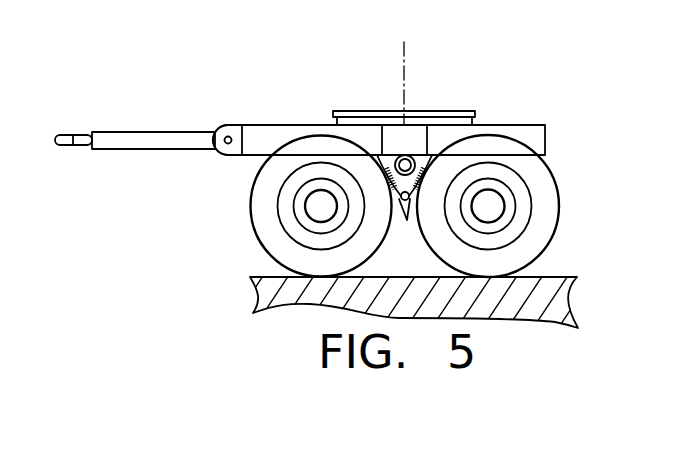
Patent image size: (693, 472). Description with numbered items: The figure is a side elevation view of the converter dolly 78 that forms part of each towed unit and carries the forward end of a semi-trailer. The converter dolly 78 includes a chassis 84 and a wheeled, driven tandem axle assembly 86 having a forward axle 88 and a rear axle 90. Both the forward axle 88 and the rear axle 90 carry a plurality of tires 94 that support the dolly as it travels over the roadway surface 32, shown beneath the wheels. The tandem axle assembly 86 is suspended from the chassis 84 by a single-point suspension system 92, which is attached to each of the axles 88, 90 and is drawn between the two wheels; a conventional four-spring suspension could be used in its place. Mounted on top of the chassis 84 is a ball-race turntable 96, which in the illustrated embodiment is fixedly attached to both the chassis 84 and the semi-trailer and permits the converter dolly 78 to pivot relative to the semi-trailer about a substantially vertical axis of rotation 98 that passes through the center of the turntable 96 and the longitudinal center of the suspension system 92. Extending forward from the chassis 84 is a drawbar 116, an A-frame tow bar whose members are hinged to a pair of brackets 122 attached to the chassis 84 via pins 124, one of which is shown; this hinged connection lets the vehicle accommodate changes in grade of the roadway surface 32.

The roadway surface 32 is at (267, 277).
The converter dolly 78 is at (359, 159).
The chassis 84 is at (546, 138).
The tandem axle assembly 86 is at (424, 206).
The forward axle 88 is at (312, 212).
The rear axle 90 is at (493, 212).
The single-point suspension system 92 is at (413, 227).
The tires 94 is at (253, 186).
The ball-race turntable 96 is at (446, 111).
The axis of rotation 98 is at (404, 65).
The drawbar 116 is at (123, 131).
The bracket 122 is at (220, 155).
The pin 124 is at (228, 133).